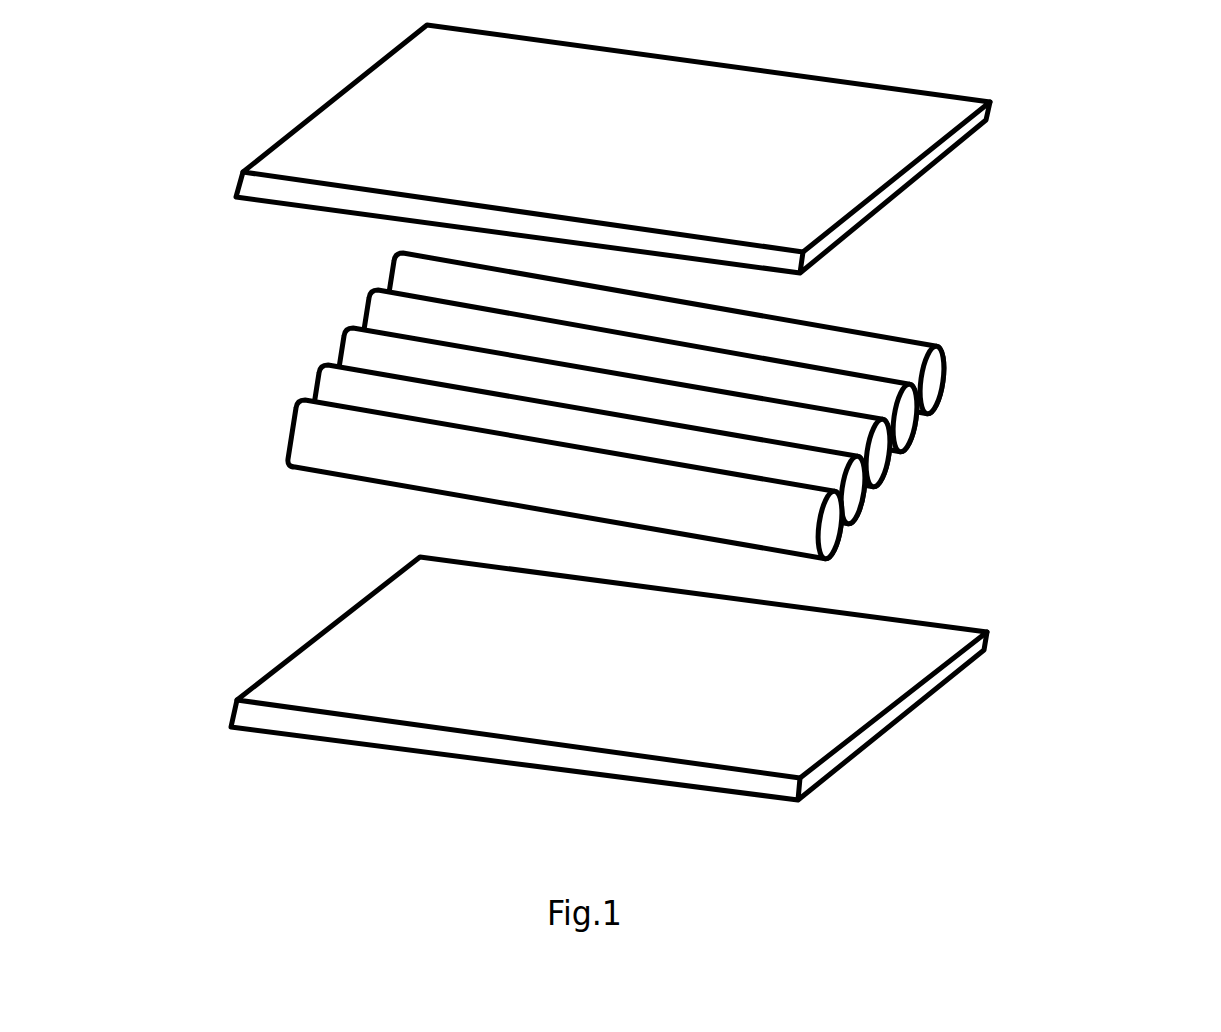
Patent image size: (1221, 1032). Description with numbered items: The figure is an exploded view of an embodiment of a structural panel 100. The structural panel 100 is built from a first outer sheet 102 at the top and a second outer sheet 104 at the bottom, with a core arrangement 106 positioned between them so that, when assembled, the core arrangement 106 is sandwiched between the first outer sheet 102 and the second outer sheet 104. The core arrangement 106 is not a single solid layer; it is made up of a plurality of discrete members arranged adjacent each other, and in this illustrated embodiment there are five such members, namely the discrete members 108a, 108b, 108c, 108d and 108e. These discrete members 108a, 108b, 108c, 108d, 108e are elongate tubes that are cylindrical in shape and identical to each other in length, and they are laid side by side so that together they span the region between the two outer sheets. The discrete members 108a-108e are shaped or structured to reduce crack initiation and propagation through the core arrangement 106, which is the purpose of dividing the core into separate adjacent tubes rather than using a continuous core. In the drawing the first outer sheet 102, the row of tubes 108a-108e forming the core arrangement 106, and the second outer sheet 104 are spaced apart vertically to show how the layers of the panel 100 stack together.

The structural panel 100 is at (1078, 250).
The first outer sheet 102 is at (970, 145).
The second outer sheet 104 is at (917, 708).
The core arrangement 106 is at (270, 245).
The discrete member 108a is at (838, 540).
The discrete member 108b is at (860, 498).
The discrete member 108c is at (886, 460).
The discrete member 108d is at (912, 422).
The discrete member 108e is at (940, 382).